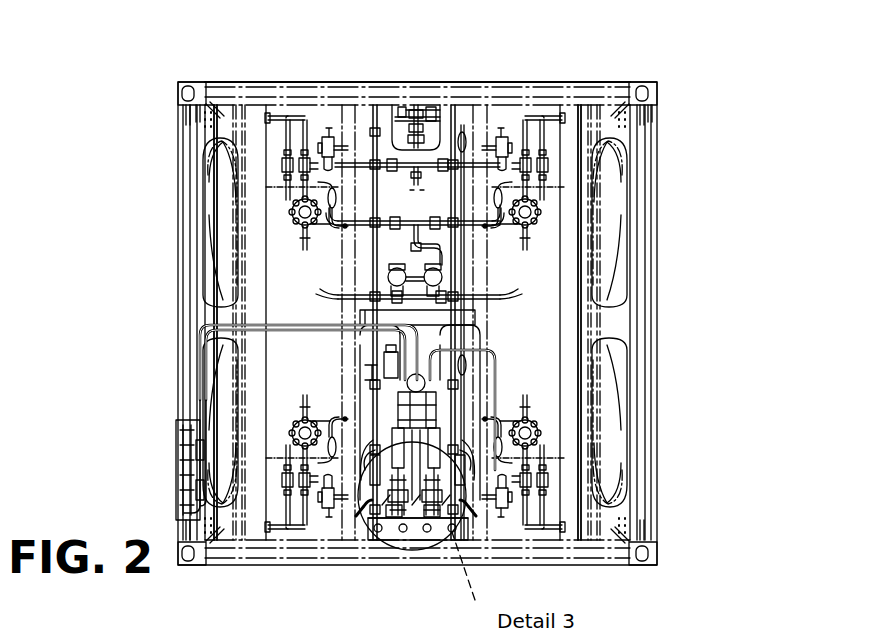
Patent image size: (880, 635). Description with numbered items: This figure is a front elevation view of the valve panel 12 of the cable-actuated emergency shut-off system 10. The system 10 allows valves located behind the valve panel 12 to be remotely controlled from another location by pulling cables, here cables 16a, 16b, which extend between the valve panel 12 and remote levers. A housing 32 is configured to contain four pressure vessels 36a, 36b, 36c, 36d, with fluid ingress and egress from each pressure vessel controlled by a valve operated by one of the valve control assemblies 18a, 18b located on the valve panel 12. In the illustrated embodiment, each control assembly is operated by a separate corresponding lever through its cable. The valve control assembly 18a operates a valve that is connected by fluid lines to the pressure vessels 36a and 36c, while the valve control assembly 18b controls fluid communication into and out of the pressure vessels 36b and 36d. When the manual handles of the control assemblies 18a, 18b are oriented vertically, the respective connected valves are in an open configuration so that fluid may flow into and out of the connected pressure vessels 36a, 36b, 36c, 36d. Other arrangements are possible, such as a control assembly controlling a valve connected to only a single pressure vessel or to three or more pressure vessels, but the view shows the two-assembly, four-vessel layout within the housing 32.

The cable-actuated emergency shut-off system 10 is at (695, 103).
The valve panel 12 is at (647, 200).
The housing 32 is at (478, 80).
The pressure vessel 36a is at (230, 445).
The pressure vessel 36b is at (600, 443).
The pressure vessel 36c is at (227, 190).
The pressure vessel 36d is at (600, 240).
The cable 16a is at (305, 421).
The cable 16b is at (157, 368).
The valve control assembly 18a is at (392, 525).
The valve control assembly 18b is at (422, 525).